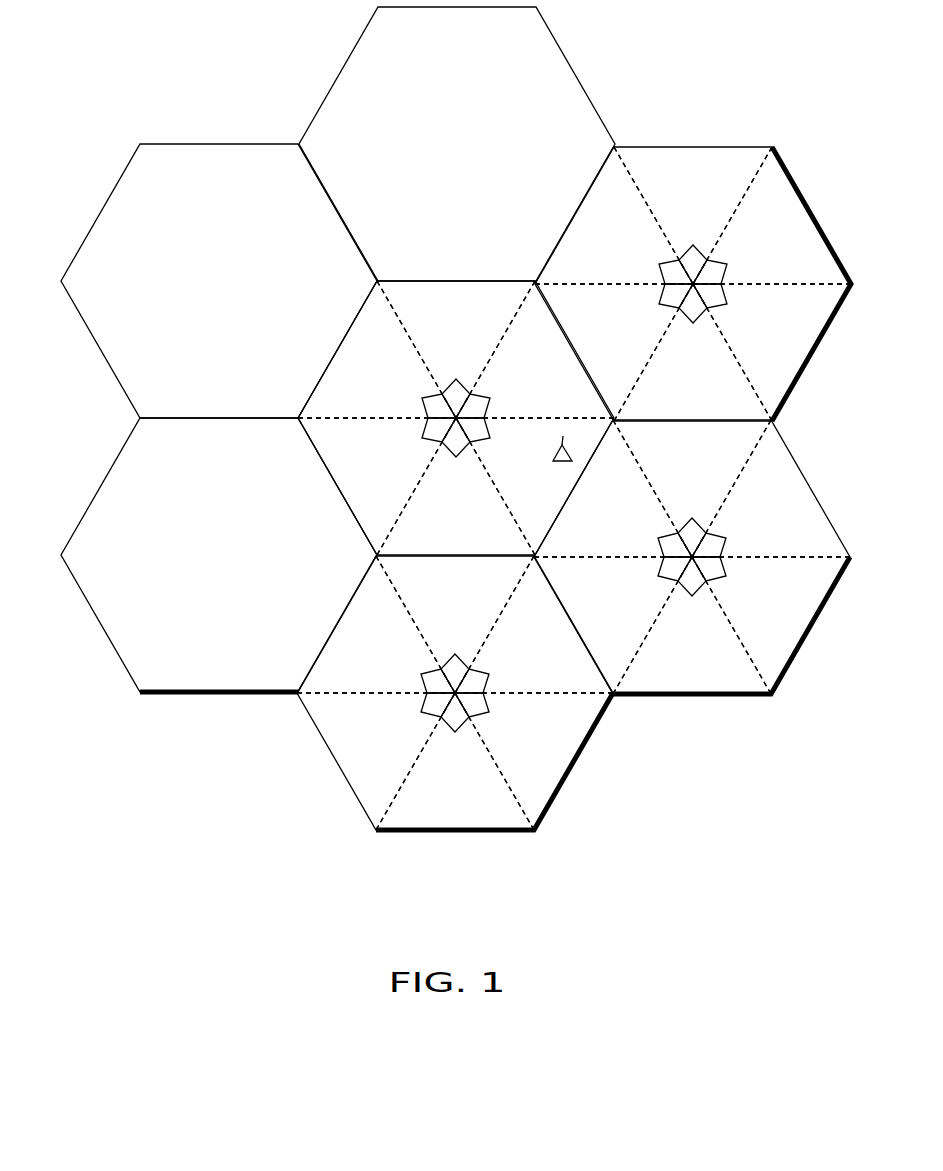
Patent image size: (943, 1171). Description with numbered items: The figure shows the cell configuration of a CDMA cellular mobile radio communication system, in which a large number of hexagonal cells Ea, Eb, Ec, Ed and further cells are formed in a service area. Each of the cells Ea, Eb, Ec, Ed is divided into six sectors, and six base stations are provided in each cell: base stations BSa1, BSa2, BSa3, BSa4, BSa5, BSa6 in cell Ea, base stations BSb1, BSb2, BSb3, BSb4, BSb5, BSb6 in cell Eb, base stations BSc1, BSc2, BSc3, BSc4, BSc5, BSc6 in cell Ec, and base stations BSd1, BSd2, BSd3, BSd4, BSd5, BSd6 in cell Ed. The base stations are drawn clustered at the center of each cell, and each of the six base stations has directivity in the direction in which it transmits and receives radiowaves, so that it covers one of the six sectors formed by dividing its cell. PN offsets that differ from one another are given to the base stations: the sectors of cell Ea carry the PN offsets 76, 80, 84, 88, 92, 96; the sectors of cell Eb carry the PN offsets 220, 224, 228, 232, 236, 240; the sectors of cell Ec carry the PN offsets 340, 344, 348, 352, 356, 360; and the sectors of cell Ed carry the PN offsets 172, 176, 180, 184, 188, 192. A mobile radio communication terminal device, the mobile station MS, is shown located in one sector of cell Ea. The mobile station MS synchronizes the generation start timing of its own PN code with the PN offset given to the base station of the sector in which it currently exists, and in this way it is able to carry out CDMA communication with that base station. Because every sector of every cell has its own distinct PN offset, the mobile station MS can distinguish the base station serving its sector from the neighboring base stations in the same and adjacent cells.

The cell Ea is at (414, 280).
The cell Eb is at (655, 146).
The cell Ec is at (660, 697).
The cell Ed is at (427, 833).
The mobile station MS is at (574, 439).
The base station BSa1 is at (444, 385).
The base station BSa2 is at (487, 408).
The base station BSa3 is at (488, 427).
The base station BSa4 is at (458, 455).
The base station BSa5 is at (420, 432).
The base station BSa6 is at (420, 405).
The base station BSb1 is at (681, 251).
The base station BSb2 is at (724, 274).
The base station BSb3 is at (725, 293).
The base station BSb4 is at (695, 321).
The base station BSb5 is at (657, 298).
The base station BSb6 is at (657, 271).
The base station BSc1 is at (680, 524).
The base station BSc2 is at (723, 547).
The base station BSc3 is at (724, 566).
The base station BSc4 is at (694, 594).
The base station BSc5 is at (656, 571).
The base station BSc6 is at (656, 544).
The base station BSd1 is at (443, 660).
The base station BSd2 is at (486, 683).
The base station BSd3 is at (487, 702).
The base station BSd4 is at (457, 730).
The base station BSd5 is at (419, 707).
The base station BSd6 is at (419, 680).
The PN offset 76 is at (456, 349).
The PN offset 80 is at (535, 349).
The PN offset 84 is at (535, 486).
The PN offset 88 is at (456, 486).
The PN offset 92 is at (377, 486).
The PN offset 96 is at (377, 349).
The PN offset 220 is at (693, 215).
The PN offset 224 is at (772, 215).
The PN offset 228 is at (772, 352).
The PN offset 232 is at (693, 352).
The PN offset 236 is at (614, 352).
The PN offset 240 is at (614, 215).
The PN offset 340 is at (692, 488).
The PN offset 344 is at (771, 488).
The PN offset 348 is at (771, 625).
The PN offset 352 is at (692, 625).
The PN offset 356 is at (613, 625).
The PN offset 360 is at (613, 488).
The PN offset 172 is at (455, 624).
The PN offset 176 is at (534, 624).
The PN offset 180 is at (534, 761).
The PN offset 184 is at (455, 761).
The PN offset 188 is at (376, 761).
The PN offset 192 is at (376, 624).